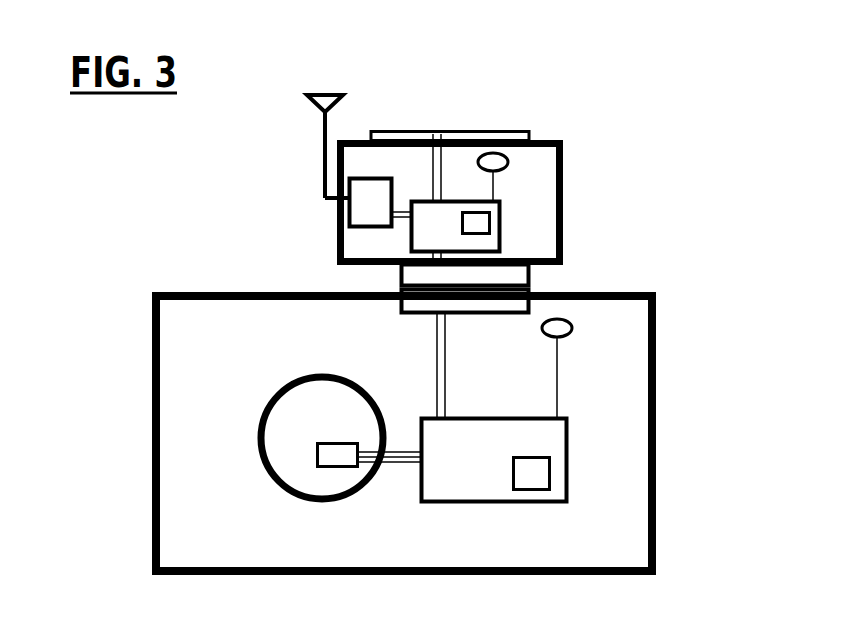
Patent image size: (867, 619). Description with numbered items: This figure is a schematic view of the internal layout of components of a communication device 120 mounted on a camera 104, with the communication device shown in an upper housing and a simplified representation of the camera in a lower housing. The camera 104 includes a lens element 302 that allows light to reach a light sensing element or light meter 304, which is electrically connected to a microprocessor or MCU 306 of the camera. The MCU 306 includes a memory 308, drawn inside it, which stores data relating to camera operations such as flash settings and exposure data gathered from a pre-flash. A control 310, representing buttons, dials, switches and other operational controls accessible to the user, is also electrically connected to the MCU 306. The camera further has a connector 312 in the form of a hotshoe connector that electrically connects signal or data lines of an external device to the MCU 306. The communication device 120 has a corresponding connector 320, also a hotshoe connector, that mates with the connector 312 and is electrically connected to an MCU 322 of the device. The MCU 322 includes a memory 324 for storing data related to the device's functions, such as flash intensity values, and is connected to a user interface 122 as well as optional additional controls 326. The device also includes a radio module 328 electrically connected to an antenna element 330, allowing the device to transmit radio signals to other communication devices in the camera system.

The camera 104 is at (657, 508).
The communication device 120 is at (563, 188).
The user interface 122 is at (512, 131).
The lens element 302 is at (263, 410).
The light meter 304 is at (316, 457).
The microprocessor (MCU) 306 is at (568, 430).
The memory 308 is at (551, 470).
The control 310 is at (572, 325).
The connector 312 is at (408, 313).
The connector 320 is at (400, 270).
The MCU 322 is at (490, 218).
The memory 324 is at (500, 208).
The additional controls 326 is at (508, 160).
The radio module 328 is at (360, 226).
The antenna element 330 is at (323, 167).